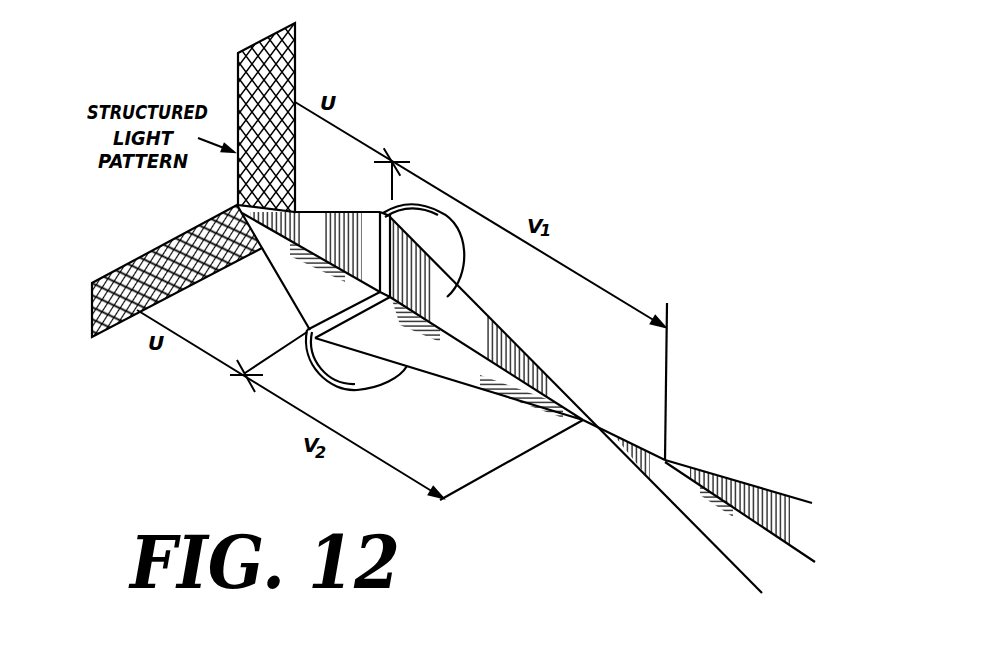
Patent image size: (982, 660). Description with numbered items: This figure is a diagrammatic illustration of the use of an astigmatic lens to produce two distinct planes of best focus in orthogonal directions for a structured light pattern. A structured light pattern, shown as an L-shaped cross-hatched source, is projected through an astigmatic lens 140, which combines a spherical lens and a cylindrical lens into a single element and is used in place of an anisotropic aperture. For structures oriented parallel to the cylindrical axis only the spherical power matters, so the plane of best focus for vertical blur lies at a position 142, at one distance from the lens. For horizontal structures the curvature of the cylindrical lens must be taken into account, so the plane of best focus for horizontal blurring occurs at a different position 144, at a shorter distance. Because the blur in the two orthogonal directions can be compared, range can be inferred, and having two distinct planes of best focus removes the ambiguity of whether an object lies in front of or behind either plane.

The astigmatic lens 140 is at (428, 230).
The plane of best focus for vertical blur 142 is at (667, 342).
The plane of best focus for horizontal blur 144 is at (480, 480).